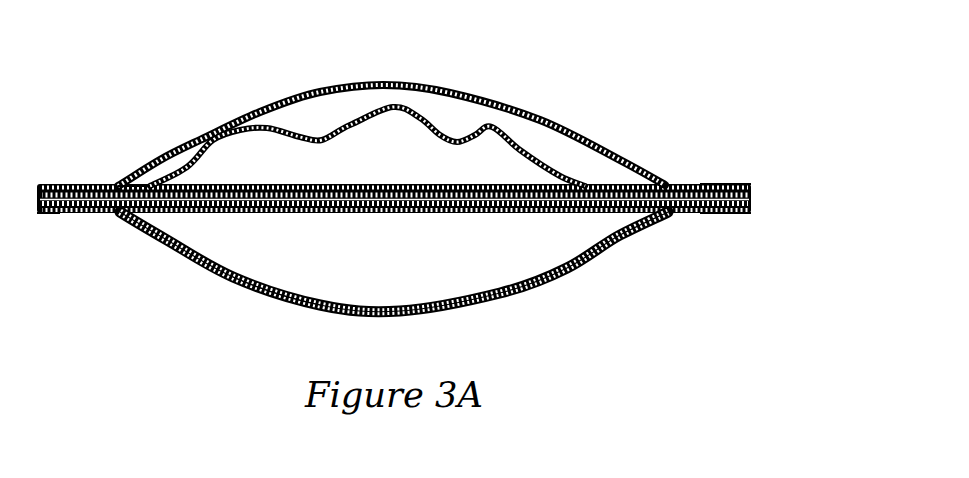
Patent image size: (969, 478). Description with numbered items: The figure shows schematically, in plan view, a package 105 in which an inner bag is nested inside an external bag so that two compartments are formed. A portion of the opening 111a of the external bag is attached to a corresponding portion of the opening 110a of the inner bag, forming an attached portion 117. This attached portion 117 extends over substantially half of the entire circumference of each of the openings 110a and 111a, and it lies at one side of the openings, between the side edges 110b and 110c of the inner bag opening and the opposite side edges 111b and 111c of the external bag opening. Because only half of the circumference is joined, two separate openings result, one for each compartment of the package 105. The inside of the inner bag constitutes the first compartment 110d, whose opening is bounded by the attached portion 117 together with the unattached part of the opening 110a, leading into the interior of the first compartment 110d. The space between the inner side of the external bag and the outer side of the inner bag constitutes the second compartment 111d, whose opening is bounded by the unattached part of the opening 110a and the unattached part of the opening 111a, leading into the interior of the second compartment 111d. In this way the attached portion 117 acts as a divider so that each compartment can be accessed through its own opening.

The package 105 is at (130, 385).
The opening of the inner bag 110a is at (497, 127).
The side edge 110b is at (40, 186).
The side edge 110c is at (742, 213).
The first compartment 110d is at (417, 166).
The opening of the external bag 111a is at (598, 145).
The side edge 111b is at (36, 212).
The side edge 111c is at (752, 193).
The second compartment 111d is at (347, 124).
The attached portion 117 is at (240, 292).